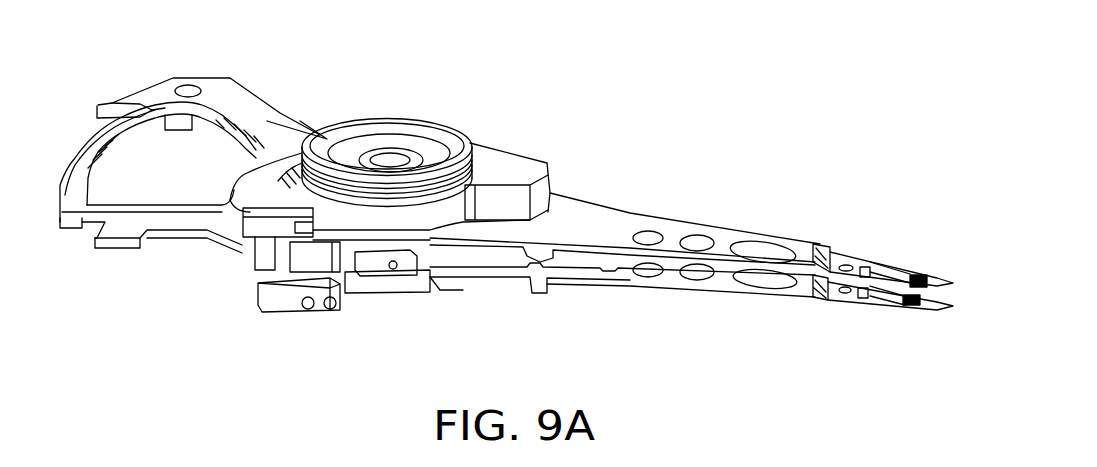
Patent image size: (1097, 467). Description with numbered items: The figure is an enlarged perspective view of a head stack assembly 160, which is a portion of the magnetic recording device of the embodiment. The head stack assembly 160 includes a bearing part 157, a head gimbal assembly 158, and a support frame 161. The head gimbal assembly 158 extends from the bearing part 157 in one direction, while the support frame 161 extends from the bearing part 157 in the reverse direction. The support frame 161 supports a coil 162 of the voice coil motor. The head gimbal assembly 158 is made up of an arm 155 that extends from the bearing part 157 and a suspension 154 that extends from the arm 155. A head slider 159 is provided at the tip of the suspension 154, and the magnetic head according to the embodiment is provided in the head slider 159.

The suspension 154 is at (883, 262).
The arm 155 is at (723, 245).
The bearing part 157 is at (405, 94).
The head gimbal assembly 158 is at (650, 198).
The head slider 159 is at (920, 280).
The head stack assembly 160 is at (610, 118).
The support frame 161 is at (224, 100).
The coil 162 is at (143, 212).